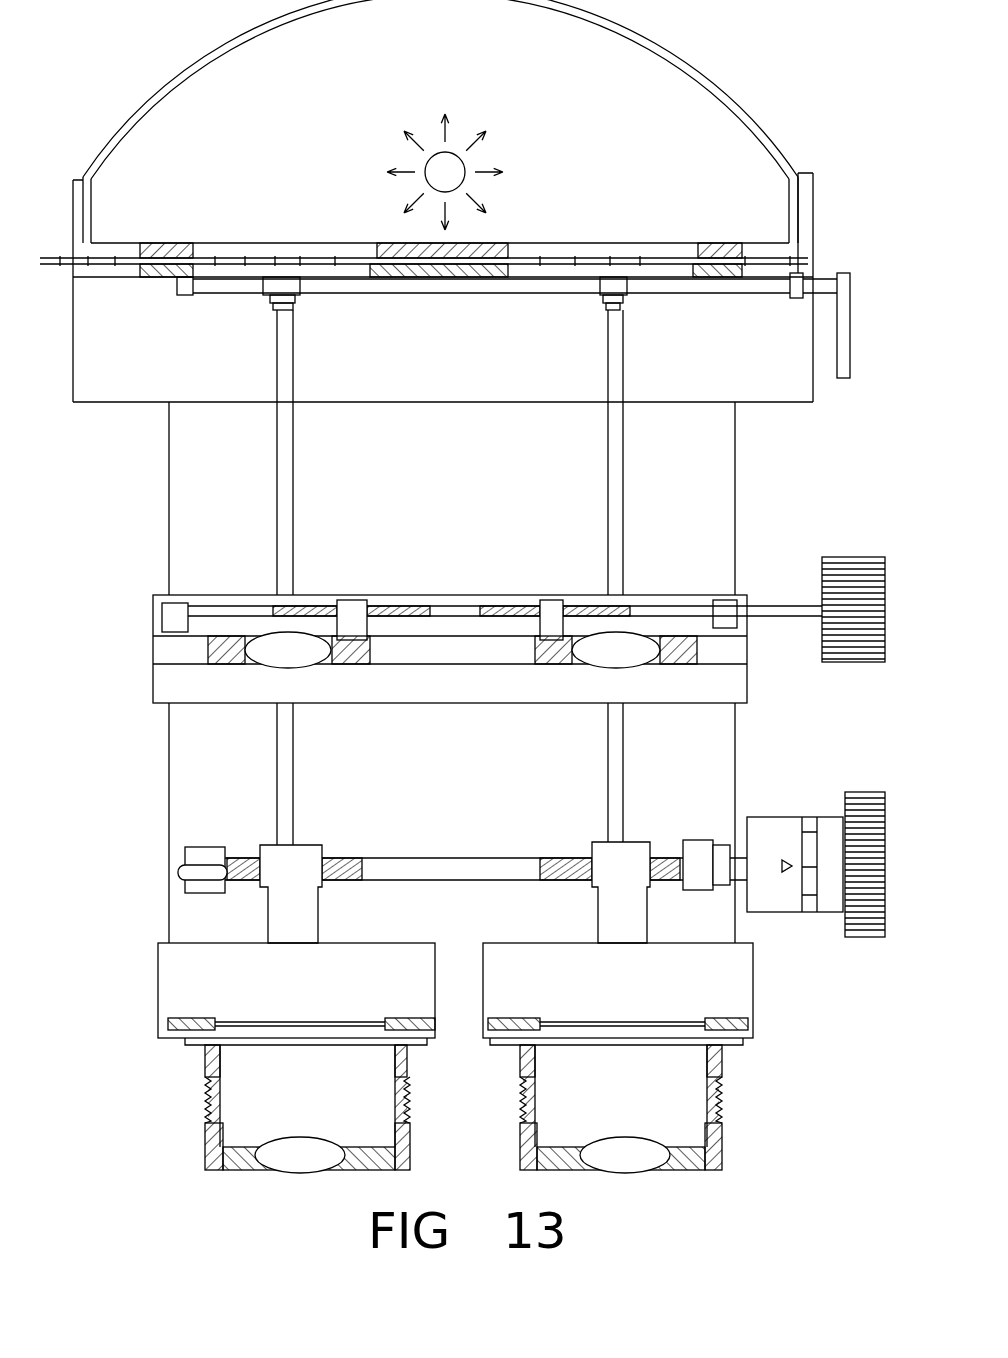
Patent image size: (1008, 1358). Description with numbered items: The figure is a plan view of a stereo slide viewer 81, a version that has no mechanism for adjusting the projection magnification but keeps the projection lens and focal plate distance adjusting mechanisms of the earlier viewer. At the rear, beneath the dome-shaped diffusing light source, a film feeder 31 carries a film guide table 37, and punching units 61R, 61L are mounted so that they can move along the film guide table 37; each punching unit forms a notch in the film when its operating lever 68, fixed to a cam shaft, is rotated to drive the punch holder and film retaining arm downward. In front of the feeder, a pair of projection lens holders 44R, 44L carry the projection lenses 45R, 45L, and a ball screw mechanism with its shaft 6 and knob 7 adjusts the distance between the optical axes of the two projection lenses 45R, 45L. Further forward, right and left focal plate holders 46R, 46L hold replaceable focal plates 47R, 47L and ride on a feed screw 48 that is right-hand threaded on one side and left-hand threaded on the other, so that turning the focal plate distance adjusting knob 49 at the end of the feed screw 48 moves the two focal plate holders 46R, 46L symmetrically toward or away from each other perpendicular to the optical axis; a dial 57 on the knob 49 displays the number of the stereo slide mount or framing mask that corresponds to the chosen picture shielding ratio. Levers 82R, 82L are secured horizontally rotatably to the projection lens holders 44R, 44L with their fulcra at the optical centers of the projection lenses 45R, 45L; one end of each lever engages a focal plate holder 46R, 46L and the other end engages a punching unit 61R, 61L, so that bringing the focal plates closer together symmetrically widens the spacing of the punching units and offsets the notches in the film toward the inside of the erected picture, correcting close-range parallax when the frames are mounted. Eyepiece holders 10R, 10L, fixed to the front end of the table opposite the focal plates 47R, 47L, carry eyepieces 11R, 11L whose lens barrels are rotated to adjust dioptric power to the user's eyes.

The stereo slide viewer 81 is at (125, 86).
The film guide table 37 is at (208, 246).
The film feeder 31 is at (151, 298).
The left punching unit 61L is at (272, 303).
The right punching unit 61R is at (622, 302).
The operating lever 68 is at (845, 380).
The left lever 82L is at (277, 550).
The right lever 82R is at (624, 483).
The horizontal adjusting shaft 6 is at (775, 605).
The knurled knob 7 is at (845, 557).
The left projection lens holder 44L is at (208, 652).
The right projection lens holder 44R is at (697, 652).
The left projection lens 45L is at (262, 668).
The right projection lens 45R is at (640, 660).
The feed screw 48 is at (245, 860).
The focal plate distance adjusting knob 49 is at (858, 792).
The dial 57 is at (822, 816).
The left focal plate holder 46L is at (178, 965).
The right focal plate holder 46R is at (742, 960).
The left focal plate 47L is at (245, 1022).
The right focal plate 47R is at (680, 1018).
The left eyepiece holder 10L is at (205, 1052).
The right eyepiece holder 10R is at (722, 1060).
The left eyepiece 11L is at (285, 1173).
The right eyepiece 11R is at (652, 1172).